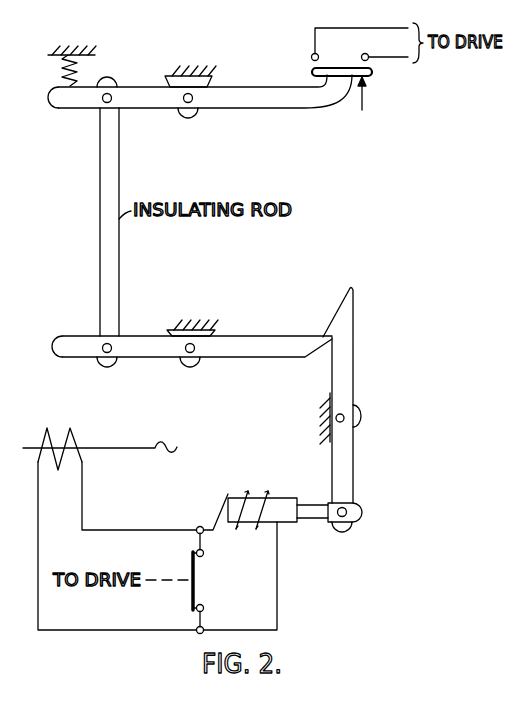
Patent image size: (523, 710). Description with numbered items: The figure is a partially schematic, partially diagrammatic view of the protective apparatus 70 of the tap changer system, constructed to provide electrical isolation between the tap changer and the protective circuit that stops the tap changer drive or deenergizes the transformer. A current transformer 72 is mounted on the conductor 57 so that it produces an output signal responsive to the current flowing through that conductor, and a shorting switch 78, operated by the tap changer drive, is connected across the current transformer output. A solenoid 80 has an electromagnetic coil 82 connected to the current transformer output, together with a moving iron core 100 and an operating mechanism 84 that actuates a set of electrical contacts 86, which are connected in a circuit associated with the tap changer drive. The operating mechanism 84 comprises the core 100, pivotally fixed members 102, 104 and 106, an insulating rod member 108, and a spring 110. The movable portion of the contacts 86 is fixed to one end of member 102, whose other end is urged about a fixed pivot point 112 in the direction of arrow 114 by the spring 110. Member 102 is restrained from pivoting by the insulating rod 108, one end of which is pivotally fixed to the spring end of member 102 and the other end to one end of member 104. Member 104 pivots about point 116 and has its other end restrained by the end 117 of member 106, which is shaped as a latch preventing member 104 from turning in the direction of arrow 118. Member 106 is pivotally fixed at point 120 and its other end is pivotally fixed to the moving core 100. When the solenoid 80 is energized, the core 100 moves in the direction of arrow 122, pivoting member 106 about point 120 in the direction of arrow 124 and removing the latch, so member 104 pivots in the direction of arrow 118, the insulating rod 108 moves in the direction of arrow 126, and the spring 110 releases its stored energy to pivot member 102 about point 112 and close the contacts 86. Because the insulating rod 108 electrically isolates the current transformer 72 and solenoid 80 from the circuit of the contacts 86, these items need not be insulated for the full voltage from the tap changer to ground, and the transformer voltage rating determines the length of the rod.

The conductor 57 is at (113, 448).
The protective apparatus 70 is at (125, 657).
The current transformer 72 is at (63, 441).
The switch 78 is at (203, 569).
The solenoid 80 is at (213, 500).
The electromagnetic coil 82 is at (229, 492).
The operating mechanism 84 is at (327, 263).
The electrical contacts 86 is at (311, 60).
The moving iron core 100 is at (285, 497).
The pivotally fixed member 102 is at (292, 133).
The pivotally fixed member 104 is at (290, 327).
The pivotally fixed member 106 is at (395, 367).
The insulating rod member 108 is at (119, 186).
The spring 110 is at (80, 80).
The fixed pivot point 112 is at (193, 98).
The arrow 114 is at (201, 124).
The pivot point 116 is at (185, 348).
The end of member 106 117 is at (341, 304).
The arrow 118 is at (204, 371).
The pivot point 120 is at (344, 414).
The arrow 122 is at (372, 513).
The arrow 124 is at (368, 432).
The arrow 126 is at (82, 236).